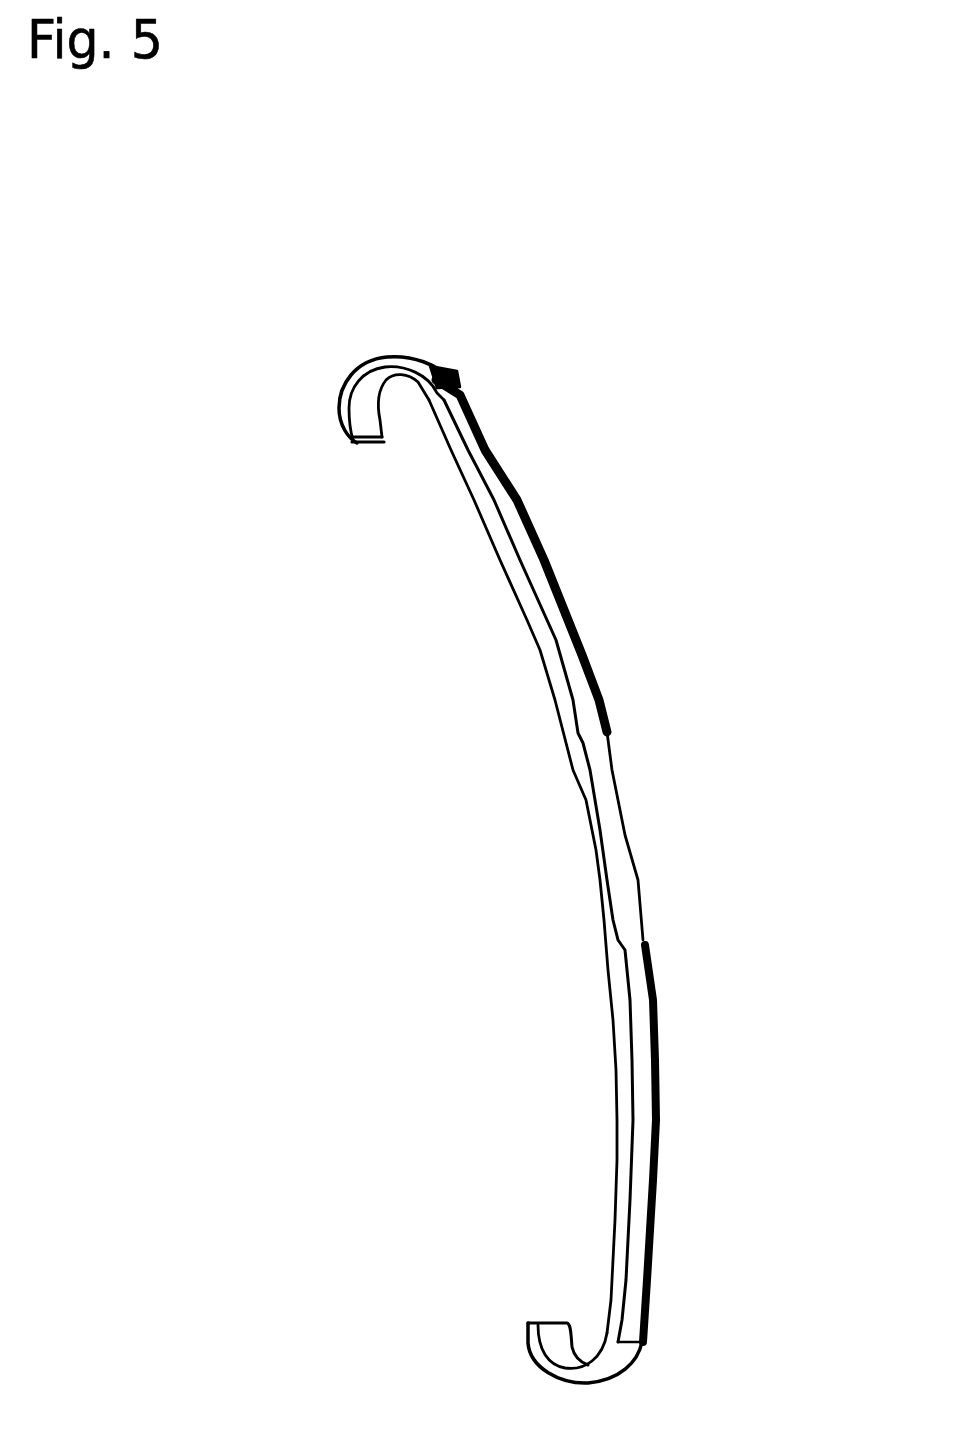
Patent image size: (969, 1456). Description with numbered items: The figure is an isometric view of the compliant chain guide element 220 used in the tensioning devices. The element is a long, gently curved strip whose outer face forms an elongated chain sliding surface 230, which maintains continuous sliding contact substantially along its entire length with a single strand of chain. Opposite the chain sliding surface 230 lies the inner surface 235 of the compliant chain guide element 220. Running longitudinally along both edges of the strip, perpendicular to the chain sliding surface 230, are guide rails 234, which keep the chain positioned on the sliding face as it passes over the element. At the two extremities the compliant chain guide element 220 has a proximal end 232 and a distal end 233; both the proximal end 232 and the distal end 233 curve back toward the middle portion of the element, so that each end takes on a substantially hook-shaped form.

The compliant chain guide element 220 is at (498, 646).
The chain sliding surface 230 is at (610, 787).
The proximal end 232 is at (530, 1322).
The distal end 233 is at (376, 443).
The guide rails 234 is at (545, 553).
The inner surface 235 is at (555, 700).